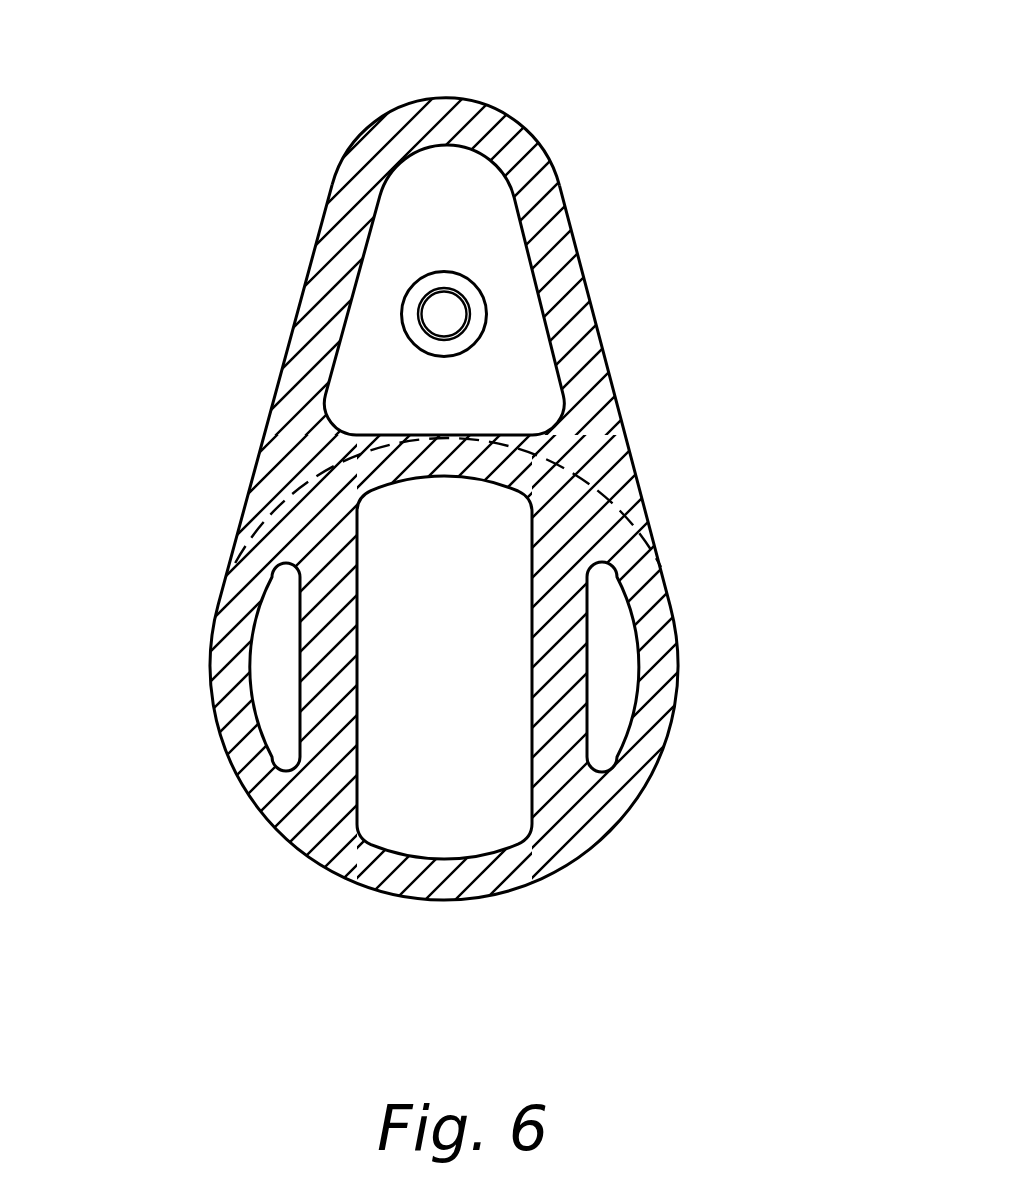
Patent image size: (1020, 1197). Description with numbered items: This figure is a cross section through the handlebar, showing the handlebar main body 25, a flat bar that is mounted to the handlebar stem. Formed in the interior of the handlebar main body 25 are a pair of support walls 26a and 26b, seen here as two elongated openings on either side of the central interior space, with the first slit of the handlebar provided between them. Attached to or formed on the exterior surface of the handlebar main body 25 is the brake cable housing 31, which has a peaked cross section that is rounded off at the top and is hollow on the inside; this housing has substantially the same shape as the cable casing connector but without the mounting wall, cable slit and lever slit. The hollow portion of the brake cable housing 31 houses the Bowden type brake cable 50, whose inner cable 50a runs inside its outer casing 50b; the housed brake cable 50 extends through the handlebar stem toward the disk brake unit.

The handlebar main body 25 is at (362, 900).
The brake cable housing 31 is at (529, 129).
The brake cable 50 is at (484, 279).
The inner cable 50a is at (444, 305).
The outer casing 50b is at (483, 313).
The support wall 26a is at (567, 693).
The support wall 26b is at (317, 652).